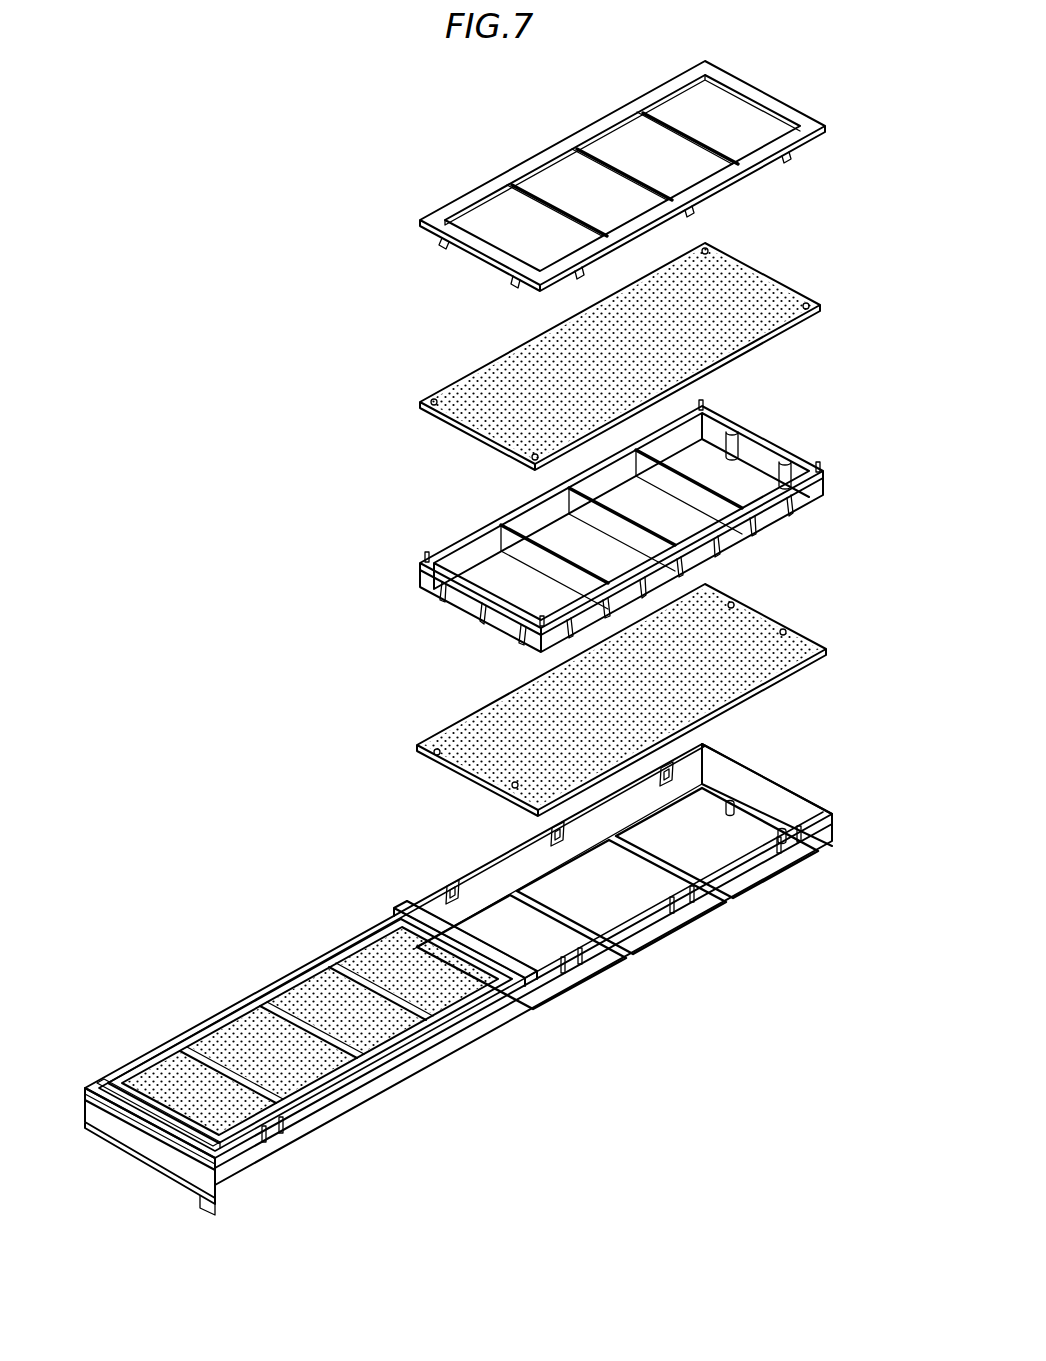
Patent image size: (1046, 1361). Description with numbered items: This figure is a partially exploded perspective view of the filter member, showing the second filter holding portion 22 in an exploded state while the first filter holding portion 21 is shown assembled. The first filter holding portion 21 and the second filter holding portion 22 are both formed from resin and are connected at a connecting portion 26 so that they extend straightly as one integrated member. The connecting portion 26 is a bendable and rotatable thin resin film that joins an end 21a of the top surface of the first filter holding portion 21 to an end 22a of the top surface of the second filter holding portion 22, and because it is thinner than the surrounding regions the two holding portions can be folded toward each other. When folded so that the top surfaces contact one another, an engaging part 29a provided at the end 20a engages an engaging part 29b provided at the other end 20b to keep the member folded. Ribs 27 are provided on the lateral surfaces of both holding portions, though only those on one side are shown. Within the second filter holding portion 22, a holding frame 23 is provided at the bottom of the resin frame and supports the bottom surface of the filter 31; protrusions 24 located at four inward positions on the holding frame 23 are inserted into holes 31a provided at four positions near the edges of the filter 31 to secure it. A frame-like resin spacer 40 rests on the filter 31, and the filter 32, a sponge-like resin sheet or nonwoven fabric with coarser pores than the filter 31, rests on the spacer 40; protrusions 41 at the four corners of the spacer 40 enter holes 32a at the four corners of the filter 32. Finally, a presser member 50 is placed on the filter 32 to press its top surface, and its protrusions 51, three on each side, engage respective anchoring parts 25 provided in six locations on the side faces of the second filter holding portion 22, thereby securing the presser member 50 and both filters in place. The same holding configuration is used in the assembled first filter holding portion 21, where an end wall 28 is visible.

The end 20a is at (830, 832).
The other end 20b is at (213, 1208).
The first filter holding portion 21 is at (332, 1118).
The end of the top surface of the first filter holding portion 21a is at (397, 923).
The second filter holding portion 22 is at (659, 935).
The end of the top surface of the second filter holding portion 22a is at (398, 912).
The holding frame 23 is at (583, 918).
The protrusions 24 is at (782, 832).
The anchoring parts 25 is at (680, 762).
The connecting portion 26 is at (400, 918).
The ribs 27 is at (760, 892).
The end wall 28 is at (143, 1152).
The engaging part 29a is at (782, 795).
The engaging part 29b is at (132, 1086).
The filter 31 is at (769, 692).
The holes 31a is at (733, 603).
The filter 32 is at (760, 347).
The holes 32a is at (708, 240).
The spacer 40 is at (790, 451).
The protrusions 41 is at (705, 402).
The presser member 50 is at (767, 89).
The protrusions 51 is at (785, 153).